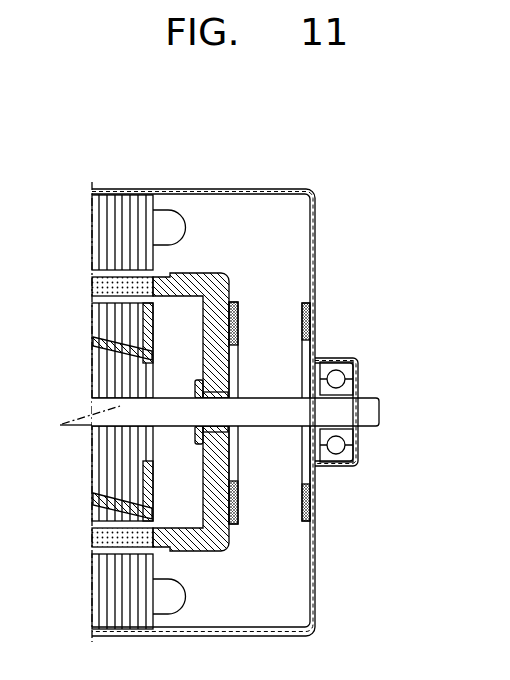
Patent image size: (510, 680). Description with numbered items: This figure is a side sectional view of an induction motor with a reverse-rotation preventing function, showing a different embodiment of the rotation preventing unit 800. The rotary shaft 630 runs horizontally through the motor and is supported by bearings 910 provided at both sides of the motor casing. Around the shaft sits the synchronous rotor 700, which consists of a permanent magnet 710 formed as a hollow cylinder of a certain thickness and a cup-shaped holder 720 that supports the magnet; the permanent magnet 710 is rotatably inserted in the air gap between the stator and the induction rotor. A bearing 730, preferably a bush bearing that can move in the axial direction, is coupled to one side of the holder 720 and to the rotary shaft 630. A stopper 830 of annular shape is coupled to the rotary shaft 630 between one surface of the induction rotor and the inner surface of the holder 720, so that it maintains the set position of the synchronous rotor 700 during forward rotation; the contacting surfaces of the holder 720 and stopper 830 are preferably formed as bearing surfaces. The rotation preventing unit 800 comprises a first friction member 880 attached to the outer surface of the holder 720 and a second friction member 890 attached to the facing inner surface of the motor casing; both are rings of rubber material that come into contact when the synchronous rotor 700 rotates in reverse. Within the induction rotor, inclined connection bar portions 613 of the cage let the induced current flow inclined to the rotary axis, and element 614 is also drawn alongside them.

The synchronous rotor 700 is at (180, 320).
The permanent magnet 710 is at (120, 272).
The holder 720 is at (212, 270).
The bearing 730 is at (232, 488).
The rotation preventing unit 800 is at (344, 387).
The first friction member 880 is at (240, 306).
The second friction member 890 is at (312, 322).
The stopper 830 is at (205, 385).
The rotary shaft 630 is at (377, 413).
The bearings 910 is at (348, 453).
The inclined connection bar portions 613 is at (95, 498).
The insulator 614 is at (153, 508).